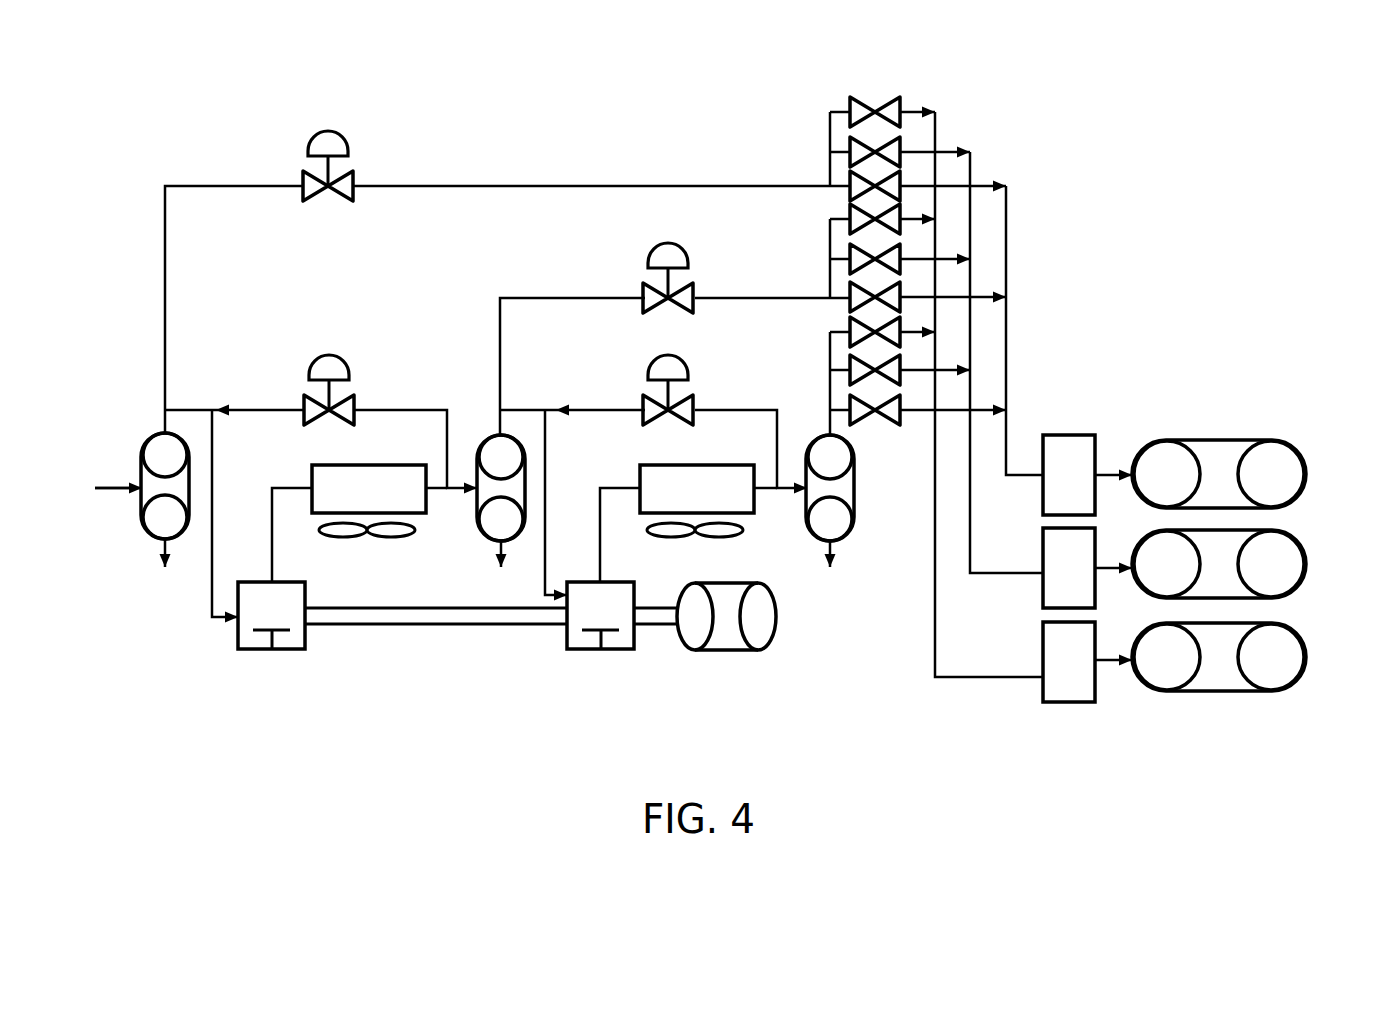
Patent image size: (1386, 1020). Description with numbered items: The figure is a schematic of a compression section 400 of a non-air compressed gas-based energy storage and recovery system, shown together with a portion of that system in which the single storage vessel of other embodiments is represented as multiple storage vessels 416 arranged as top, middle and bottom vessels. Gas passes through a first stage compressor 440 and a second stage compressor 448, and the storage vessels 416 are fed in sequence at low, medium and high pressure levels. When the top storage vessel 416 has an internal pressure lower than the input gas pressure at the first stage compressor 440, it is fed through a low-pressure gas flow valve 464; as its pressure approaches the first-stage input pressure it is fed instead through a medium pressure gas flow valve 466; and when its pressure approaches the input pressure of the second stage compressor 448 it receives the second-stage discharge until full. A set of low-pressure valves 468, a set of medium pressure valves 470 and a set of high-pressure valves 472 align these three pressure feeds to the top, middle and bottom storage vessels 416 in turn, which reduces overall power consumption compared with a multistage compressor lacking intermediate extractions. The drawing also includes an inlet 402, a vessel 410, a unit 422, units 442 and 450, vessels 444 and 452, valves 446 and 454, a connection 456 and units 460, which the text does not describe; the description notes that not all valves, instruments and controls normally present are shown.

The compression section 400 is at (998, 98).
The feed gas inlet 402 is at (116, 486).
The first separator 410 is at (148, 524).
The storage vessels 416 is at (1300, 638).
The motor / driver 422 is at (726, 651).
The first stage compressor 440 is at (272, 651).
The first cooler / heat exchanger 442 is at (388, 536).
The second separator 444 is at (483, 527).
The first recycle control valve 446 is at (328, 355).
The second stage compressor 448 is at (600, 649).
The second cooler / heat exchanger 450 is at (716, 536).
The third separator 452 is at (812, 531).
The second recycle control valve 454 is at (668, 356).
The common drive shaft 456 is at (434, 626).
The dispensers / metering units 460 is at (1043, 642).
The low-pressure gas flow valve 464 is at (328, 131).
The medium pressure gas flow valve 466 is at (668, 243).
The set of low-pressure valves 468 is at (850, 174).
The set of medium pressure valves 470 is at (850, 285).
The set of high-pressure valves 472 is at (850, 398).